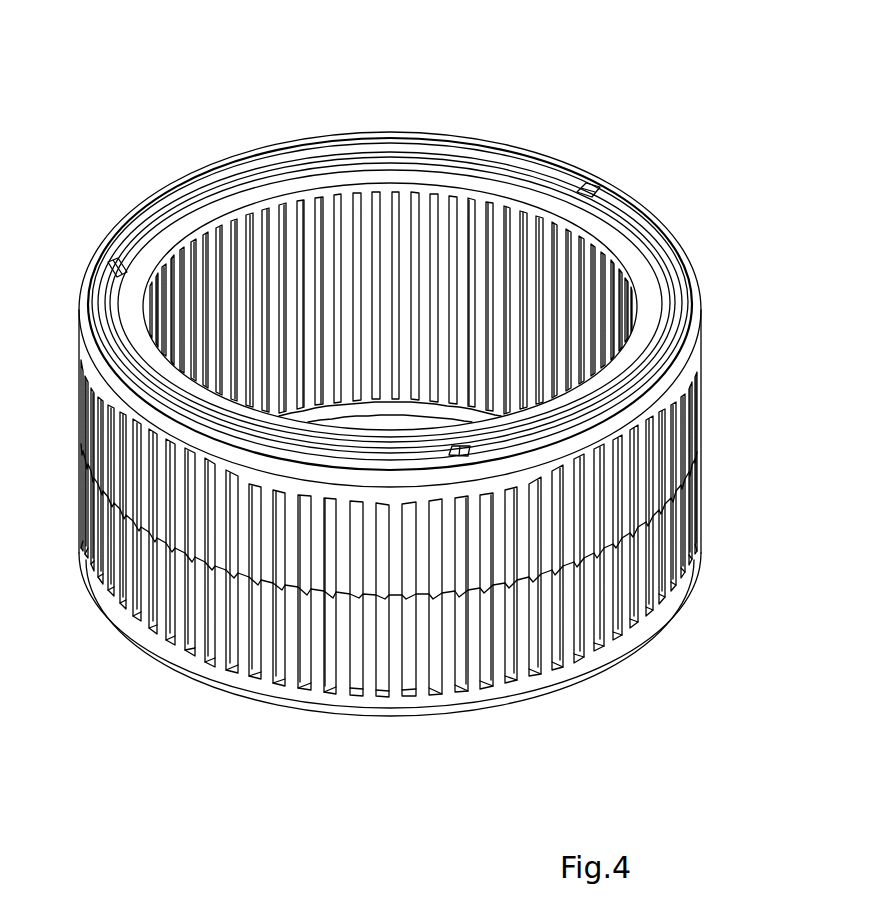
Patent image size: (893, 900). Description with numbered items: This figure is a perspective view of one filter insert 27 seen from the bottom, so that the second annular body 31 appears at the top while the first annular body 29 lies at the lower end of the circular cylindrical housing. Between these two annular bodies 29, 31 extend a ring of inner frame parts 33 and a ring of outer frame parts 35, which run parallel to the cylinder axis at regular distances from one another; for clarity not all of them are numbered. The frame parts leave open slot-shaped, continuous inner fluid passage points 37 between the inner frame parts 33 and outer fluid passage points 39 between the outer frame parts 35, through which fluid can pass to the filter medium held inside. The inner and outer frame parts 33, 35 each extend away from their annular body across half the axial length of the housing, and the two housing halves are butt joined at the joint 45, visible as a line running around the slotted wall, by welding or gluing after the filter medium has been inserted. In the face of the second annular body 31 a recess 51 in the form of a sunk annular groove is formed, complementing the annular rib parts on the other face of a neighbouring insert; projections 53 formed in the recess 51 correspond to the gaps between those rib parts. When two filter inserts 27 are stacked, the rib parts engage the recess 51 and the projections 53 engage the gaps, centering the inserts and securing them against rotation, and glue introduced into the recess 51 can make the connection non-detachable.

The filter insert 27 is at (552, 114).
The first annular body 29 is at (263, 706).
The second annular body 31 is at (682, 275).
The inner frame parts 33 is at (334, 204).
The outer frame parts 35 is at (176, 640).
The inner fluid passage points 37 is at (336, 360).
The outer fluid passage points 39 is at (586, 640).
The joint 45 is at (470, 328).
The recess 51 is at (622, 220).
The projections 53 is at (116, 268).